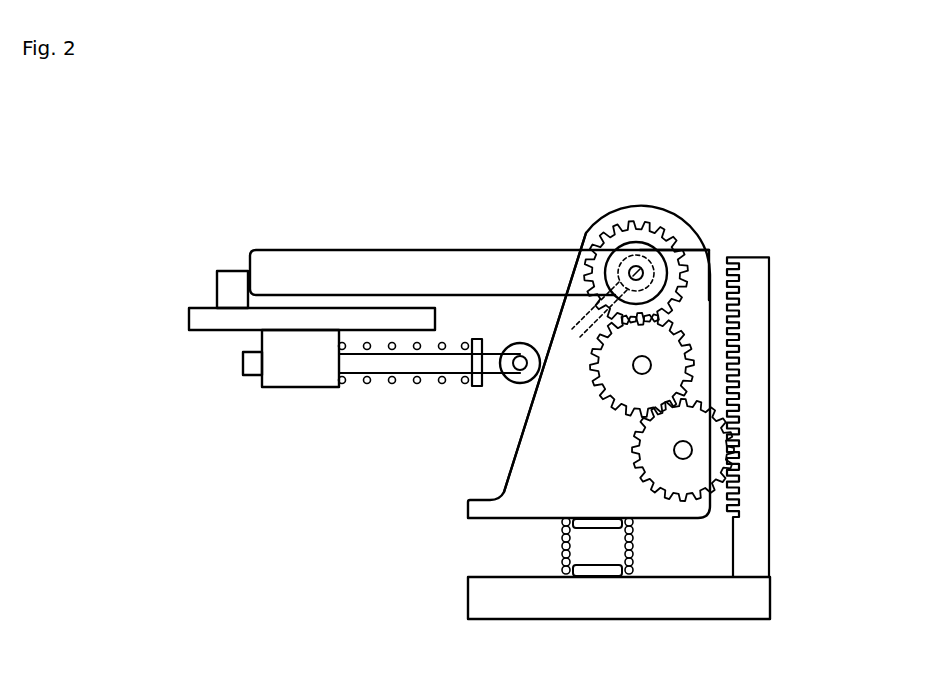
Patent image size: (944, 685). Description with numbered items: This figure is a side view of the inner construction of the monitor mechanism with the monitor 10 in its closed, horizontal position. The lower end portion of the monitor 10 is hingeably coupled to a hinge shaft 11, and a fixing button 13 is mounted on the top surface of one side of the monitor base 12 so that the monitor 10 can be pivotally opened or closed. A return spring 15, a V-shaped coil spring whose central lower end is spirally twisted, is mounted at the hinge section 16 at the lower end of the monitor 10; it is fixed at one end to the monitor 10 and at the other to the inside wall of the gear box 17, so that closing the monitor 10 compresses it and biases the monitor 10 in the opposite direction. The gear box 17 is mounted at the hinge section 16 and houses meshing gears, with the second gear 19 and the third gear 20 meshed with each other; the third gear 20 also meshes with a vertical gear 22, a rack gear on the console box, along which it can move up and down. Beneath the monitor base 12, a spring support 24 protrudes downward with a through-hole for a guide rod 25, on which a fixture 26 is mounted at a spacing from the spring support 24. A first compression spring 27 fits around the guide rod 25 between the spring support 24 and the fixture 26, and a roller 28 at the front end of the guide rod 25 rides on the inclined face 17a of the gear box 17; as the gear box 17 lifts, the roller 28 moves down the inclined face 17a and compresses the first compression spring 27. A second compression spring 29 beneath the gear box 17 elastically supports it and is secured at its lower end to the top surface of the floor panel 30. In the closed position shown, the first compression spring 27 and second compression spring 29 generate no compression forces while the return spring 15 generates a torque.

The monitor 10 is at (332, 250).
The hinge shaft 11 is at (703, 247).
The monitor base 12 is at (205, 322).
The fixing button 13 is at (233, 280).
The return spring 15 is at (582, 264).
The hinge section 16 is at (643, 223).
The gear box 17 is at (515, 452).
The inclined face 17a is at (527, 410).
The second gear 19 is at (692, 338).
The third gear 20 is at (713, 440).
The vertical gear 22 is at (752, 290).
The spring support 24 is at (293, 373).
The guide rod 25 is at (252, 378).
The fixture 26 is at (474, 335).
The first compression spring 27 is at (392, 388).
The roller 28 is at (522, 340).
The second compression spring 29 is at (562, 543).
The floor panel 30 is at (475, 598).